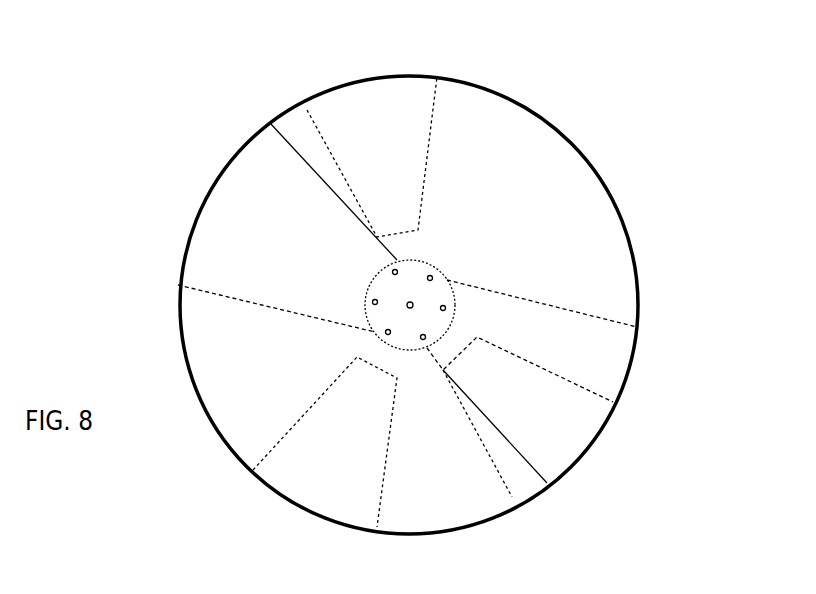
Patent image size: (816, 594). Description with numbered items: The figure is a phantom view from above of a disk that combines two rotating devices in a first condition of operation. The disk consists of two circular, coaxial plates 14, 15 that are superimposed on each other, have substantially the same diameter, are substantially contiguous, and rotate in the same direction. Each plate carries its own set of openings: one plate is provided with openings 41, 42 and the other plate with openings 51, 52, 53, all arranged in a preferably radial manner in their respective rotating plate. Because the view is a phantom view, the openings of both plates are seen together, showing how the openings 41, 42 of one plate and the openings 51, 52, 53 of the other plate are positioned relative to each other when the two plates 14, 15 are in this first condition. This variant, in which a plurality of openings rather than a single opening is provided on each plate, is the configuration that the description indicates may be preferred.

The circular plate 14 is at (620, 192).
The circular plate 15 is at (456, 305).
The opening 41 is at (273, 233).
The opening 42 is at (583, 342).
The opening 51 is at (350, 115).
The opening 52 is at (320, 467).
The opening 53 is at (557, 437).